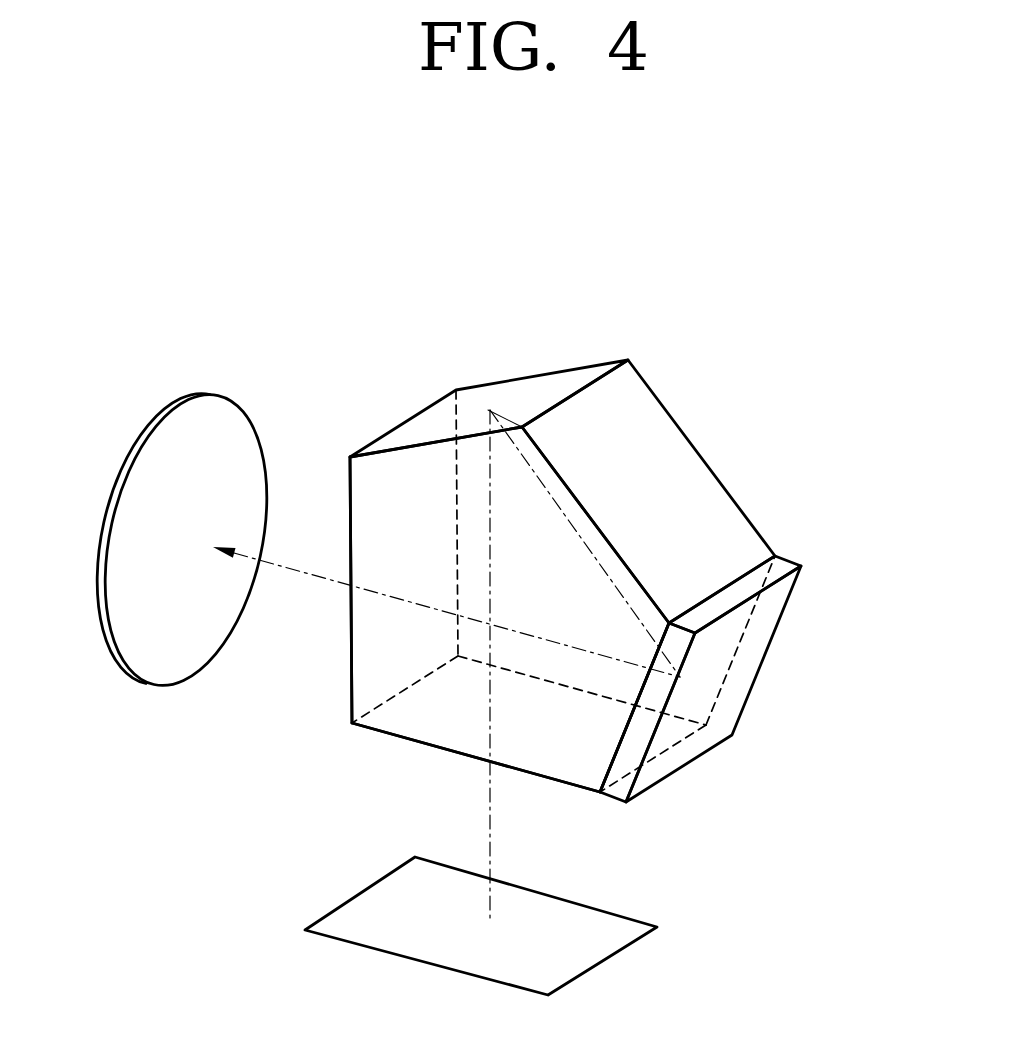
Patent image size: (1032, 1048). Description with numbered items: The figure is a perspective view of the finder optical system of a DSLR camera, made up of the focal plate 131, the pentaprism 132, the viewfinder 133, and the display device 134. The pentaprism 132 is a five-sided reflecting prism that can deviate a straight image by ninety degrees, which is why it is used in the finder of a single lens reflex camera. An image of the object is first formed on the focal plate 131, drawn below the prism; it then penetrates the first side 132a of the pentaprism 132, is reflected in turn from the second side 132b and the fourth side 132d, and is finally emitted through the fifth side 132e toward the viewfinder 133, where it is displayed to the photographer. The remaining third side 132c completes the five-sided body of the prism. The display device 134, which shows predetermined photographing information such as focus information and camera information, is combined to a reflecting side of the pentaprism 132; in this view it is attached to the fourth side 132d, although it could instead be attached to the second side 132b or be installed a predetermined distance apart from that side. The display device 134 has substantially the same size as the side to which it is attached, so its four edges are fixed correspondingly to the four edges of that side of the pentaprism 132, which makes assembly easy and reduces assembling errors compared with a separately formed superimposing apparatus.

The focal plate 131 is at (600, 943).
The pentaprism 132 is at (708, 337).
The first side of pentaprism 132a is at (455, 720).
The second side of pentaprism 132b is at (528, 392).
The third side of pentaprism 132c is at (662, 473).
The fourth side of pentaprism 132d is at (693, 767).
The fifth side of pentaprism 132e is at (388, 642).
The viewfinder 133 is at (138, 658).
The display device 134 is at (782, 597).